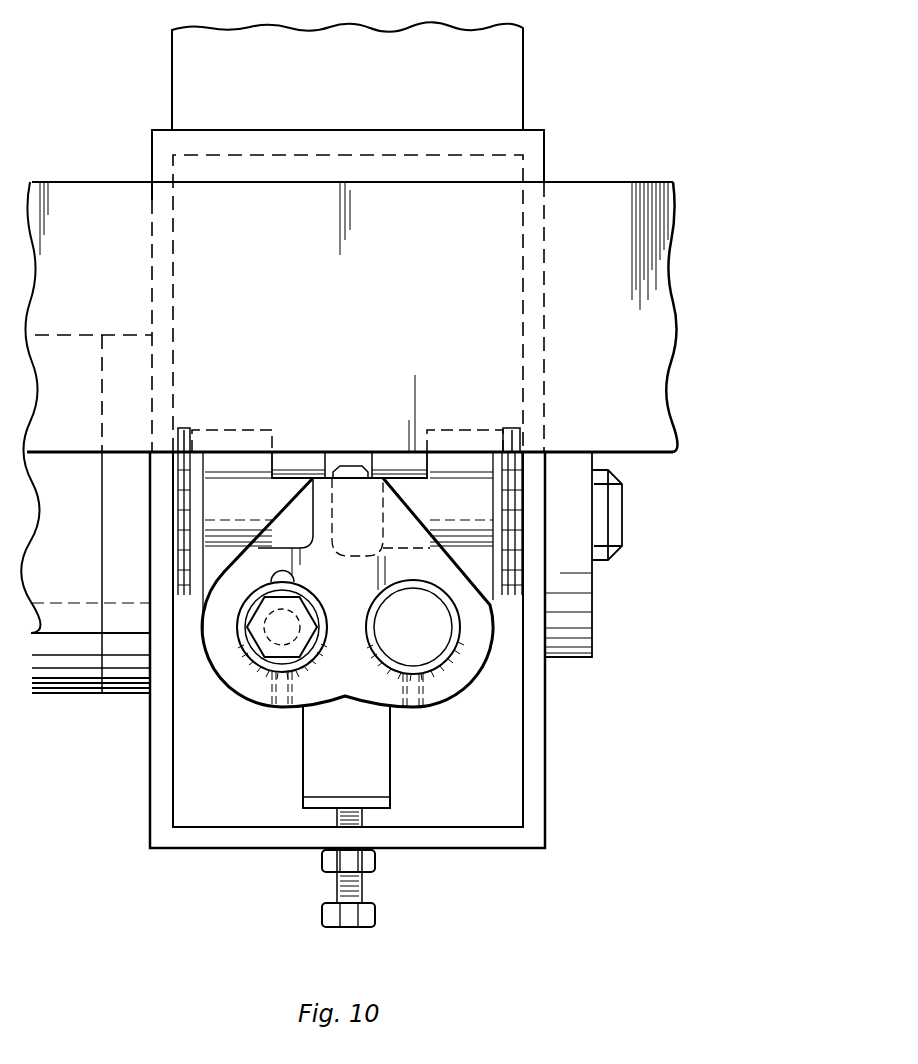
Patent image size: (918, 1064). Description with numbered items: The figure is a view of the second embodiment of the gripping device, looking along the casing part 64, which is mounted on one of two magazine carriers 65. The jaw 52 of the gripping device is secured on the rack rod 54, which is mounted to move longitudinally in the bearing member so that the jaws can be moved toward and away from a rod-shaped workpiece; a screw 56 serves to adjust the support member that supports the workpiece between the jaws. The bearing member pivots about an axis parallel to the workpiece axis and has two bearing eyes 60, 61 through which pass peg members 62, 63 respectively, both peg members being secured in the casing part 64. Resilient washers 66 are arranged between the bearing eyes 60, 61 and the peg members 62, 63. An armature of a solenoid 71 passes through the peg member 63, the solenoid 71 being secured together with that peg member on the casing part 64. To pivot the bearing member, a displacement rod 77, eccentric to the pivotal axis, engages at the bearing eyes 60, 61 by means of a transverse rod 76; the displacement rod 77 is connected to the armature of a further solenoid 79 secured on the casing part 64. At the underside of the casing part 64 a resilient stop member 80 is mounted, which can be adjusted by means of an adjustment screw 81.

The solenoid 79 is at (506, 68).
The magazine carrier 65 is at (610, 327).
The resilient washers 66 is at (184, 428).
The transverse rod 76 is at (288, 466).
The displacement rod 77 is at (330, 462).
The jaw 52 is at (355, 470).
The bearing eye 60 is at (206, 600).
The bearing eye 61 is at (497, 605).
The peg member 62 is at (573, 642).
The rack rod 54 is at (262, 650).
The screw 56 is at (283, 688).
The resilient stop member 80 is at (390, 743).
The adjustment screw 81 is at (363, 897).
The casing part 64 is at (540, 782).
The solenoid 71 is at (70, 695).
The peg member 63 is at (130, 695).